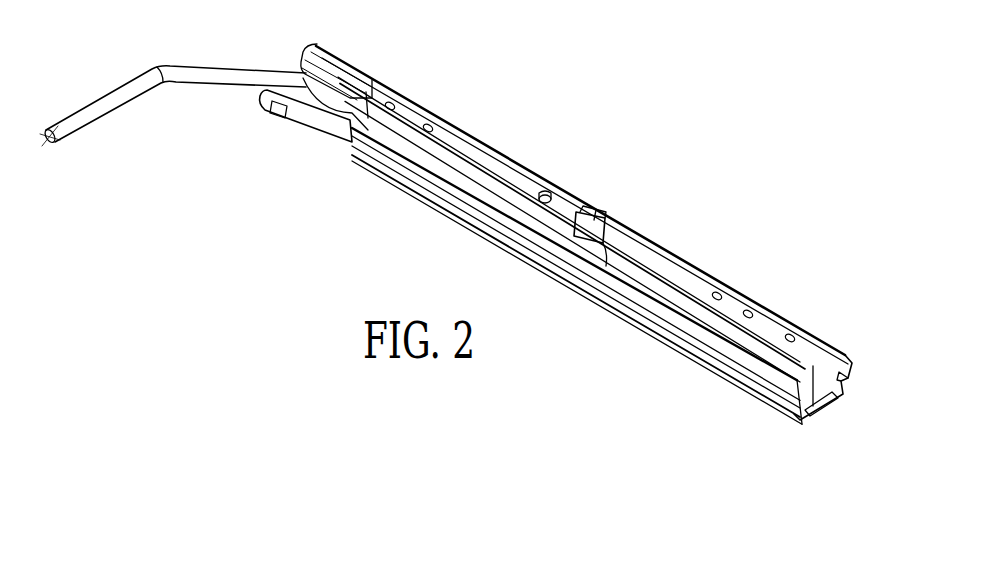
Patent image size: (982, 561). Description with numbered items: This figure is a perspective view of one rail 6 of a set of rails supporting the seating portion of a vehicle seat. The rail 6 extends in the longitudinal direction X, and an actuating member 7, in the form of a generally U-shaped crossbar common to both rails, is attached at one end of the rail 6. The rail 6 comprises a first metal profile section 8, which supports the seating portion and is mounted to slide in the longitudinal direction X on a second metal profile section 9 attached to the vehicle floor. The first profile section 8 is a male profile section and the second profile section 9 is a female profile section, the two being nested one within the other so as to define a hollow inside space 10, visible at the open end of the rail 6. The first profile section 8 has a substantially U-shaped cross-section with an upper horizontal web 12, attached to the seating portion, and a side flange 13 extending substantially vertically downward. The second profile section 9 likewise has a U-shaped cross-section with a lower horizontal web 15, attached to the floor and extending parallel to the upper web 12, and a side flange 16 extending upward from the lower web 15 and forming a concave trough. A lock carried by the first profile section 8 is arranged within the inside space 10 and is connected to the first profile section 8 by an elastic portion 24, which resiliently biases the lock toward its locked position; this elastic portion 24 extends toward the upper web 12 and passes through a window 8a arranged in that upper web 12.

The rail 6 is at (529, 141).
The actuating member 7 is at (128, 84).
The first metal profile section 8 is at (727, 280).
The window 8a is at (603, 252).
The second metal profile section 9 is at (790, 421).
The hollow inside space 10 is at (829, 395).
The upper horizontal web 12 is at (470, 148).
The side flange 13 is at (780, 367).
The lower horizontal web 15 is at (817, 415).
The side flange 16 is at (746, 372).
The elastic portion 24 is at (619, 218).
The longitudinal direction X is at (652, 128).